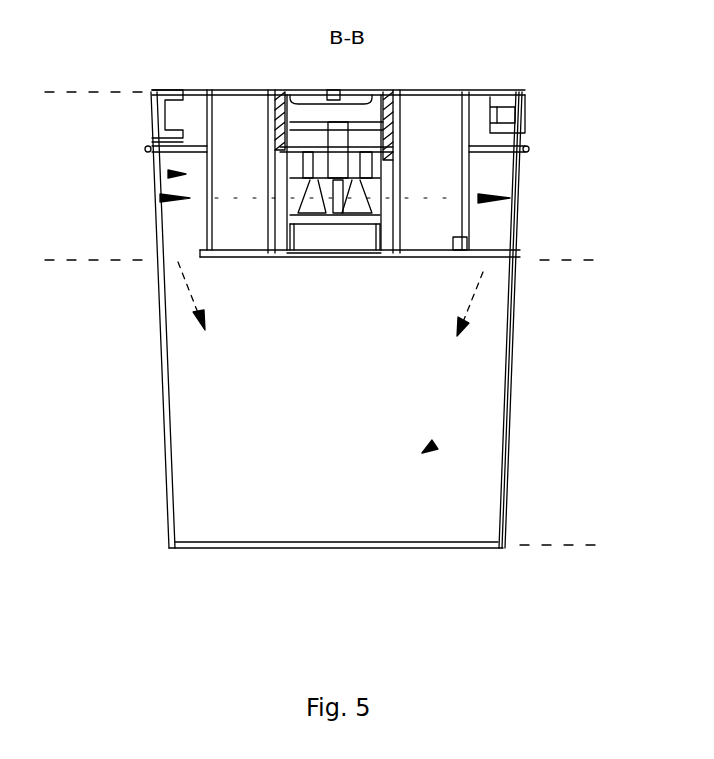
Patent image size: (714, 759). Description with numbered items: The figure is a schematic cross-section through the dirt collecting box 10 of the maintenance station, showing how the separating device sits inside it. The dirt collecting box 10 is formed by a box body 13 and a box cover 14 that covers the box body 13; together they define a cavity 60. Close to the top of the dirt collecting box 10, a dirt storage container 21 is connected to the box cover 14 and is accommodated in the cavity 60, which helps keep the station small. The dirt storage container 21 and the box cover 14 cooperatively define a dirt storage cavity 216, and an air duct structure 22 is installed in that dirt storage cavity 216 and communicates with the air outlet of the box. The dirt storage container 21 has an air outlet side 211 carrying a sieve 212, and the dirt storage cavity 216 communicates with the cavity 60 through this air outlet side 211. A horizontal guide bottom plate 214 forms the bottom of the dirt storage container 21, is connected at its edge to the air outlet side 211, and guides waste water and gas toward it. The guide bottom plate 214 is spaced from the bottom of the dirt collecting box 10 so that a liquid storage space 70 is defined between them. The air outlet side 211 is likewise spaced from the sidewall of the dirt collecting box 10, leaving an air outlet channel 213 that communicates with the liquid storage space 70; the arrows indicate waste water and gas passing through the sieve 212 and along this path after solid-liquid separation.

The dirt collecting box 10 is at (609, 92).
The box body 13 is at (524, 220).
The box cover 14 is at (518, 108).
The dirt storage container 21 is at (433, 258).
The air duct structure 22 is at (400, 118).
The air outlet side 211 is at (467, 162).
The sieve 212 is at (207, 122).
The air outlet channel 213 is at (168, 174).
The guide bottom plate 214 is at (352, 258).
The dirt storage cavity 216 is at (240, 120).
The cavity 60 is at (237, 388).
The liquid storage space 70 is at (430, 449).